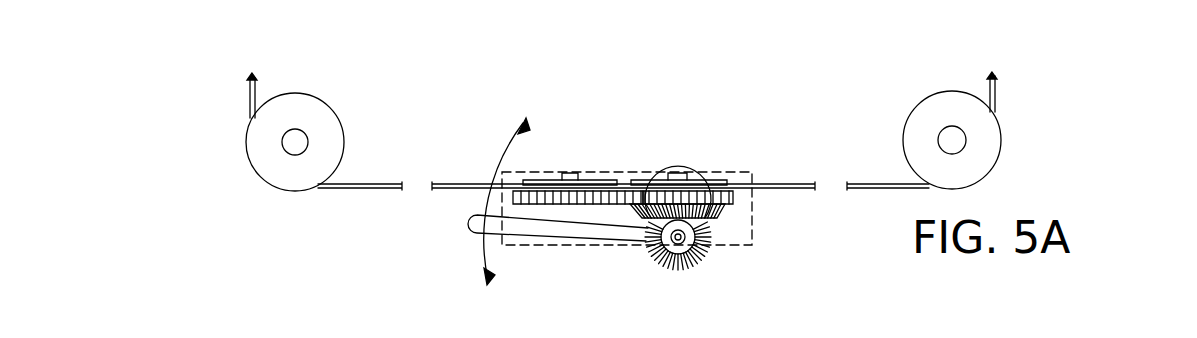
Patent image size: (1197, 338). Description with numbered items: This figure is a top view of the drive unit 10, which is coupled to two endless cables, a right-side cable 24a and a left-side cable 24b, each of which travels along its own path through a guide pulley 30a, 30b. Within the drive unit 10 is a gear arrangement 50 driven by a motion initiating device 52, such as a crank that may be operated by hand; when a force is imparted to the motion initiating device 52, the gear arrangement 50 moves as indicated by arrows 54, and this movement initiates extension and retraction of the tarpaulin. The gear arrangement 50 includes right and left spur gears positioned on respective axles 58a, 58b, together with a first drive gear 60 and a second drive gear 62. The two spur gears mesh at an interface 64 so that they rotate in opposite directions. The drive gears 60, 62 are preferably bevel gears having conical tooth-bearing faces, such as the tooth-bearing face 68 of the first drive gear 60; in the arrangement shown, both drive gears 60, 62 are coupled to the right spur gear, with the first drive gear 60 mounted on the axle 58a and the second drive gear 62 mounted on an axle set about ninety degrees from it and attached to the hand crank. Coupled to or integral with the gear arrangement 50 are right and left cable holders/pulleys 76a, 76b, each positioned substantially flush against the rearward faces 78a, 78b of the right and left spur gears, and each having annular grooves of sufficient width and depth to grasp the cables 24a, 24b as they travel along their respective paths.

The drive unit 10 is at (1094, 79).
The right-side cable 24a is at (996, 90).
The left-side cable 24b is at (250, 90).
The guide pulley 30a is at (987, 148).
The guide pulley 30b is at (258, 178).
The gear arrangement 50 is at (838, 287).
The motion initiating device 52 is at (466, 223).
The arrows 54 is at (487, 175).
The axle 58a is at (688, 178).
The axle 58b is at (573, 172).
The first drive gear 60 is at (722, 212).
The second drive gear 62 is at (697, 268).
The interface 64 is at (643, 194).
The tooth-bearing face 68 is at (720, 214).
The right cable holder/pulley 76a is at (674, 180).
The left cable holder/pulley 76b is at (551, 172).
The rearward face 78a is at (655, 192).
The rearward face 78b is at (535, 197).